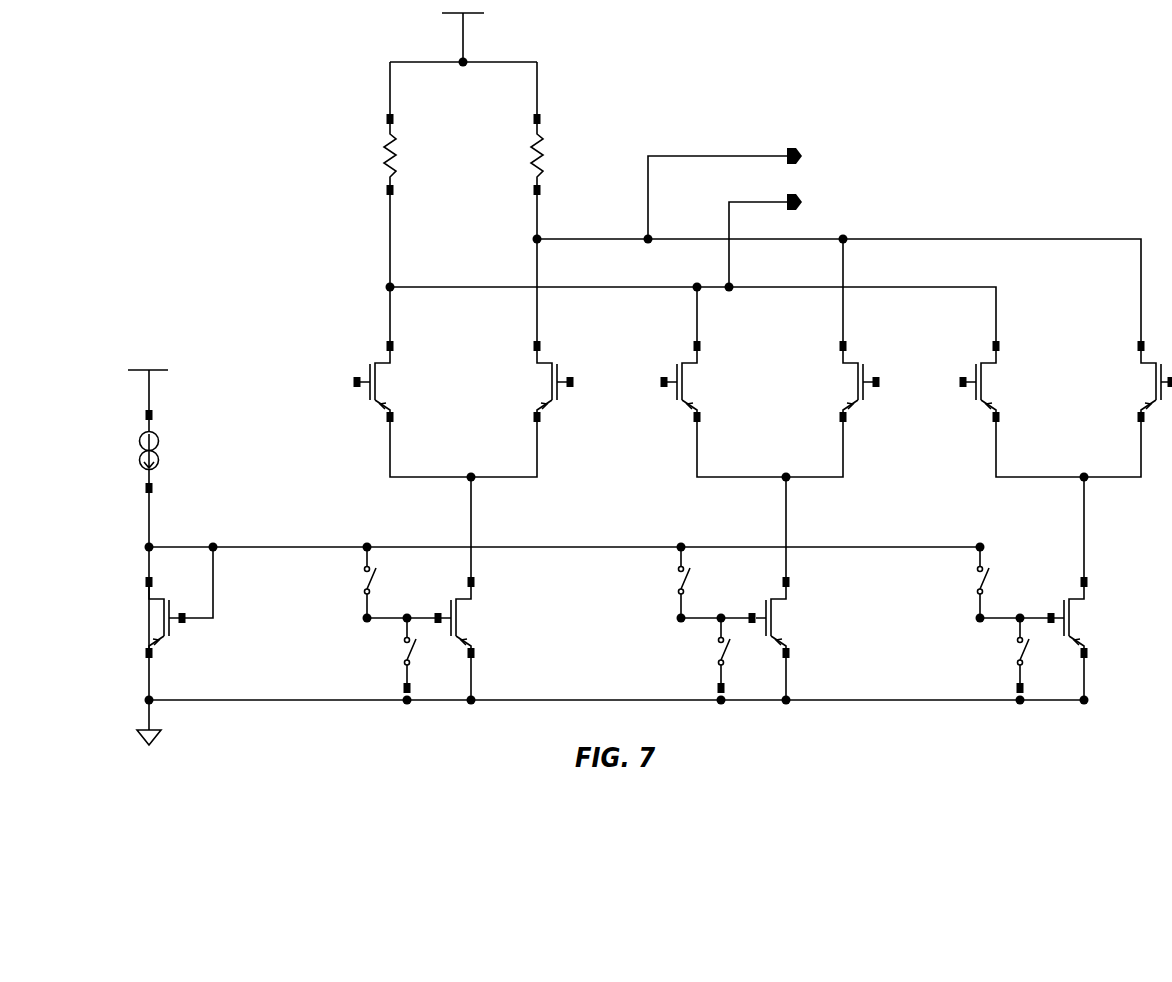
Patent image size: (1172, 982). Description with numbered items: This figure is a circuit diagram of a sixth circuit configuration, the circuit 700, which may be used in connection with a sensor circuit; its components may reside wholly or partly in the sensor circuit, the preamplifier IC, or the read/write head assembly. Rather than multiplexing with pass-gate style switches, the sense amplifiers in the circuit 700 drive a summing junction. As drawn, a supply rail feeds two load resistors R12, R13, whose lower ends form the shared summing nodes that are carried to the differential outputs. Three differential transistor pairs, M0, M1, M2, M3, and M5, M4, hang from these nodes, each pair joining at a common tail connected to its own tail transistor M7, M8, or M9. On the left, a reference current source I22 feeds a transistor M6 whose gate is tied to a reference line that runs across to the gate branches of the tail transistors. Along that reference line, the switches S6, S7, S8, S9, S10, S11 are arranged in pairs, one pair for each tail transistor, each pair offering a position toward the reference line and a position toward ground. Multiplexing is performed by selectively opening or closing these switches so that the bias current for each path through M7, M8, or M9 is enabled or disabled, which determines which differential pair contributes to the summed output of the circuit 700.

The circuit 700 is at (650, 389).
The load resistor R12 is at (410, 128).
The load resistor R13 is at (557, 128).
The differential pair transistor M0 is at (382, 381).
The differential pair transistor M1 is at (545, 381).
The differential pair transistor M2 is at (689, 381).
The differential pair transistor M3 is at (851, 381).
The differential pair transistor M4 is at (1146, 381).
The differential pair transistor M5 is at (988, 381).
The current mirror reference transistor M6 is at (158, 617).
The tail current transistor M7 is at (463, 617).
The tail current transistor M8 is at (777, 617).
The tail current transistor M9 is at (1076, 617).
The reference current source I22 is at (168, 451).
The switch S6 is at (371, 617).
The switch S7 is at (412, 692).
The switch S8 is at (685, 617).
The switch S9 is at (726, 692).
The switch S10 is at (1025, 692).
The switch S11 is at (984, 617).